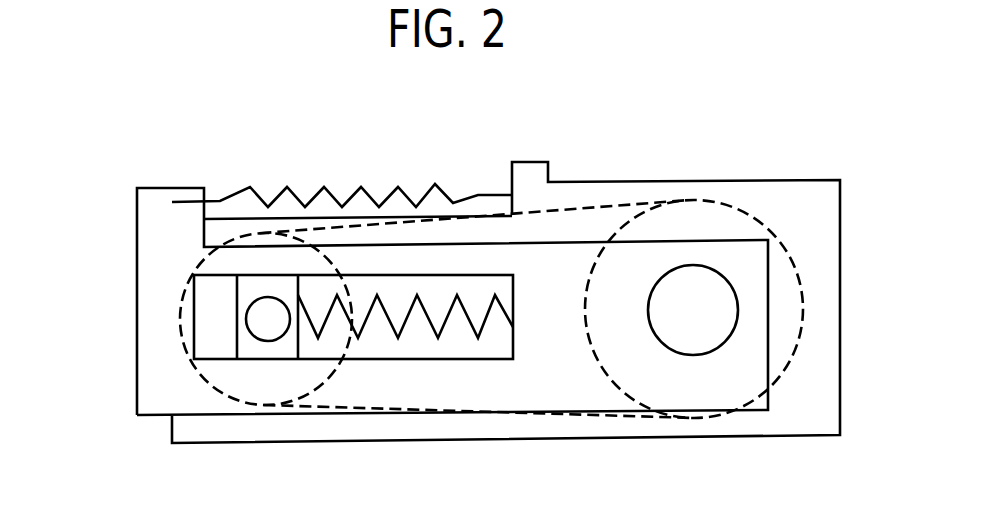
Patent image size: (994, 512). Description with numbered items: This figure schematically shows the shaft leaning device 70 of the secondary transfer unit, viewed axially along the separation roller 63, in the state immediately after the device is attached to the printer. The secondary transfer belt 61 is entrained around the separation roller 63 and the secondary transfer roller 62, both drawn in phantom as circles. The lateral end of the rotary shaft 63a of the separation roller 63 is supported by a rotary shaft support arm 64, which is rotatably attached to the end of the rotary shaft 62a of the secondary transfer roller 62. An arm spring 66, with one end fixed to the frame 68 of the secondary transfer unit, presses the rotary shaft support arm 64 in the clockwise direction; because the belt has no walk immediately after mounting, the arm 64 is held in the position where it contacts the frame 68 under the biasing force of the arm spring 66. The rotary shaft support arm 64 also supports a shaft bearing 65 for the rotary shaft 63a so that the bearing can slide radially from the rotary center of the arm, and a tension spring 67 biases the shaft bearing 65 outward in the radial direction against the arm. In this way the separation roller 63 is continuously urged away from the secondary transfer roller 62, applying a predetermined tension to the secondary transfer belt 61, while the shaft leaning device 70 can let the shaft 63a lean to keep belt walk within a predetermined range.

The shaft leaning device 70 is at (212, 124).
The frame 68 is at (778, 180).
The rotary shaft support arm 64 is at (137, 235).
The arm spring 66 is at (278, 190).
The shaft bearing 65 is at (236, 313).
The rotary shaft 63a is at (263, 332).
The tension spring 67 is at (447, 326).
The separation roller 63 is at (338, 372).
The secondary transfer roller 62 is at (597, 376).
The rotary shaft 62a is at (713, 355).
The secondary transfer belt 61 is at (587, 208).